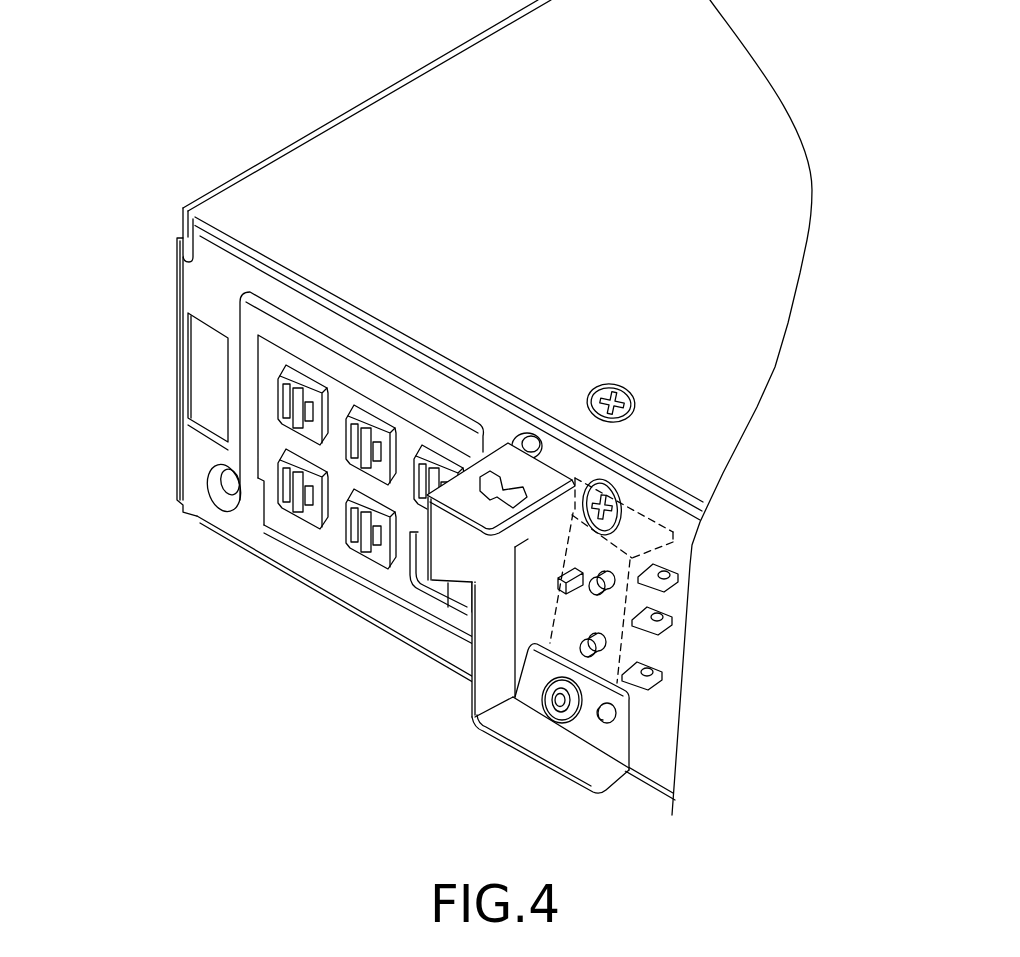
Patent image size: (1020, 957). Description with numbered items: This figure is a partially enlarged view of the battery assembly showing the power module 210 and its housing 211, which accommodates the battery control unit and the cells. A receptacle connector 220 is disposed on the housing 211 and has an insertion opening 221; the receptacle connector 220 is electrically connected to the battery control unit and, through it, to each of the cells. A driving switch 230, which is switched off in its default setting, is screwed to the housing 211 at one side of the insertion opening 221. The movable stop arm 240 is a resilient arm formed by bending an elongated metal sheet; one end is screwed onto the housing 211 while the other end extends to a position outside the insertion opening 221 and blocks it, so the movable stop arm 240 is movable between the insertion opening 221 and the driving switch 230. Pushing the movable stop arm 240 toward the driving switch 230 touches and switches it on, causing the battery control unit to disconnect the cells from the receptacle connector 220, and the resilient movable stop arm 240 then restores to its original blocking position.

The power module 210 is at (382, 85).
The housing 211 is at (177, 340).
The receptacle connector 220 is at (228, 388).
The insertion opening 221 is at (272, 437).
The driving switch 230 is at (567, 612).
The movable stop arm 240 is at (437, 545).